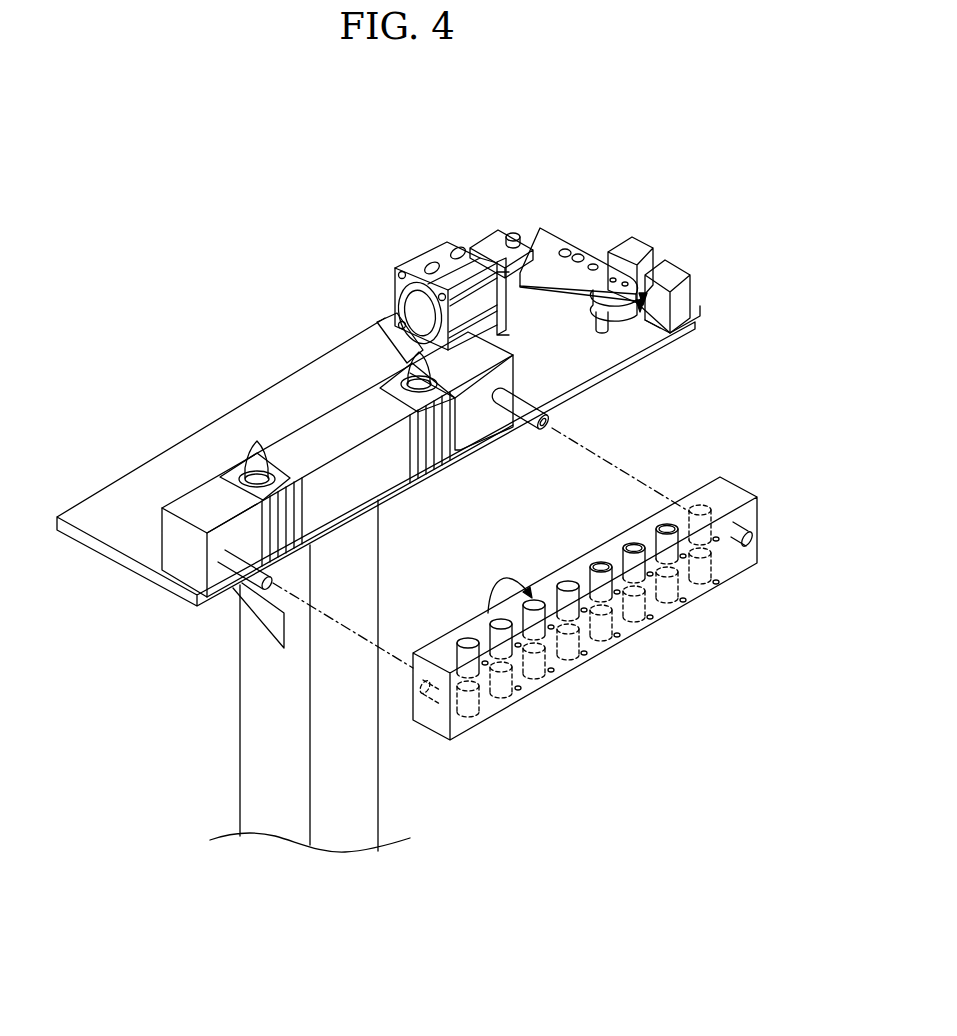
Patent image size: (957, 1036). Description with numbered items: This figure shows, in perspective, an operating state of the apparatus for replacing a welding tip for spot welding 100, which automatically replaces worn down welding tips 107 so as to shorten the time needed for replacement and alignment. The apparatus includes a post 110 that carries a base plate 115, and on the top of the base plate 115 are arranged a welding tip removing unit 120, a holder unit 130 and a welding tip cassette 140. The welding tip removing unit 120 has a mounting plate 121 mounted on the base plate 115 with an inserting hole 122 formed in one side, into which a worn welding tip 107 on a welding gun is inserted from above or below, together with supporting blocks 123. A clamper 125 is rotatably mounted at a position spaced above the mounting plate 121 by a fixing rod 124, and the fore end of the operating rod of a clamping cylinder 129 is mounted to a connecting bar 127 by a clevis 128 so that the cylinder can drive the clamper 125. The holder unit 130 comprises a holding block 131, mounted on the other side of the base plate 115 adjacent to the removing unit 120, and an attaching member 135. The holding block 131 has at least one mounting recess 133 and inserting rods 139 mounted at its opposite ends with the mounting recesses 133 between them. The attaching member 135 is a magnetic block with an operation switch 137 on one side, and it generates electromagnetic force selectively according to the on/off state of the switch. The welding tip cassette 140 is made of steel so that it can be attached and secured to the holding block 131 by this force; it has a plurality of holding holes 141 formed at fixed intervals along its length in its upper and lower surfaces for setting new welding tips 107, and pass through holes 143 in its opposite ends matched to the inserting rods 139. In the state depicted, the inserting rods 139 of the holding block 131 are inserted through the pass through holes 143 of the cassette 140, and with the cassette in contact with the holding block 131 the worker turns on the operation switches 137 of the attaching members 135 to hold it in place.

The apparatus for replacing a welding tip for spot welding 100 is at (268, 223).
The welding tip 107 is at (672, 593).
The post 110 is at (253, 745).
The base plate 115 is at (112, 535).
The welding tip removing unit 120 is at (558, 281).
The mounting plate 121 is at (615, 358).
The inserting hole 122 is at (668, 300).
The supporting blocks 123 is at (668, 265).
The fixing rod 124 is at (612, 322).
The clamper 125 is at (597, 320).
The connecting bar 127 is at (582, 265).
The clevis 128 is at (484, 245).
The clamping cylinder 129 is at (430, 262).
The holder unit 130 is at (342, 482).
The holding block 131 is at (186, 562).
The mounting recess 133 is at (457, 452).
The attaching member 135 is at (433, 457).
The operation switch 137 is at (412, 365).
The inserting rods 139 is at (245, 587).
The welding tip cassette 140 is at (515, 610).
The holding holes 141 is at (567, 657).
The pass through holes 143 is at (466, 703).